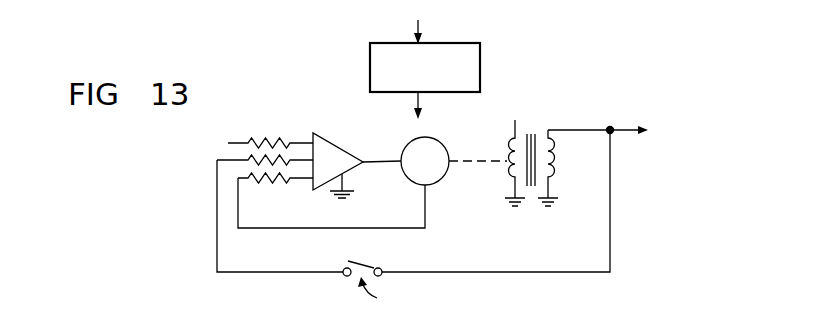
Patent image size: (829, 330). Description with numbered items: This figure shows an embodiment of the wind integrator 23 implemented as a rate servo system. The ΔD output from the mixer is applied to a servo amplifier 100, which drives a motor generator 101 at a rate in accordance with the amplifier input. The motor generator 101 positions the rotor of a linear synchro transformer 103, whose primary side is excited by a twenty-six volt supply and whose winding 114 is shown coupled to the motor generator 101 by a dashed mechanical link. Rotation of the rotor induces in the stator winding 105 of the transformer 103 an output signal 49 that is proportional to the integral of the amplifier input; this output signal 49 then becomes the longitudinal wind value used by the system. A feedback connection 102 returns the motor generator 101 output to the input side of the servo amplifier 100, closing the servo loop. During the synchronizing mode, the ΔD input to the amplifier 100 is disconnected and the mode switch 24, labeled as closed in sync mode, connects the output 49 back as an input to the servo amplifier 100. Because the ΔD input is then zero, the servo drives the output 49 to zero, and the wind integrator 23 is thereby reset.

The wind integrator 23 is at (385, 43).
The output signal 49 is at (418, 102).
The servo amplifier 100 is at (344, 147).
The motor generator 101 is at (446, 150).
The feedback line 102 is at (353, 224).
The linear synchro transformer 103 is at (529, 167).
The stator winding 105 is at (553, 164).
The primary winding 114 is at (508, 172).
The mode switch 24 is at (371, 266).